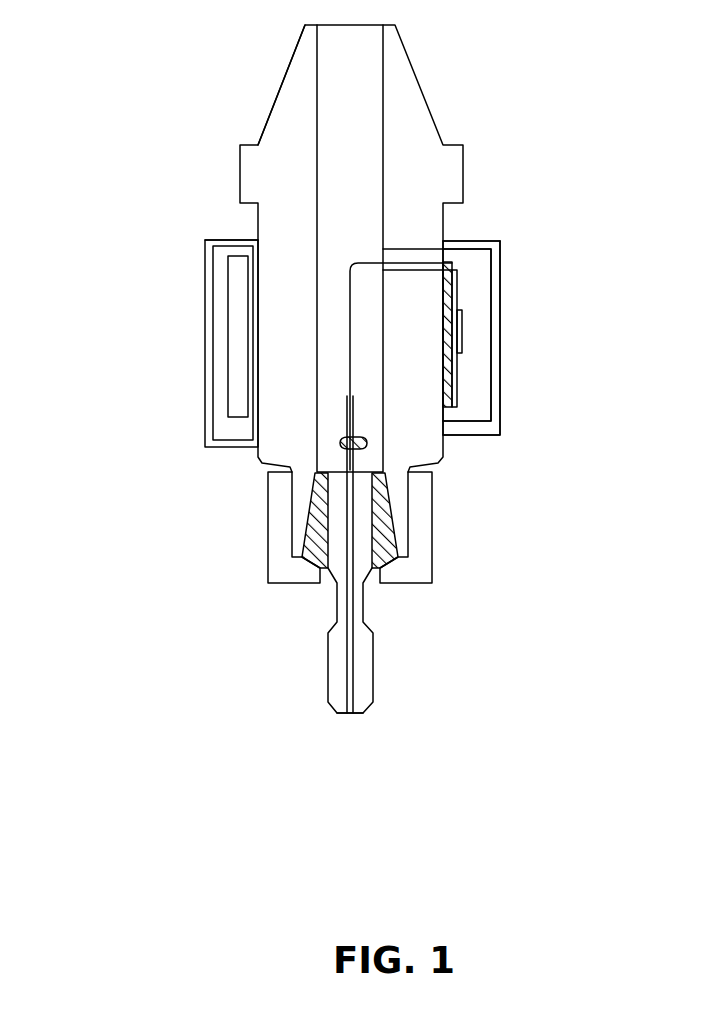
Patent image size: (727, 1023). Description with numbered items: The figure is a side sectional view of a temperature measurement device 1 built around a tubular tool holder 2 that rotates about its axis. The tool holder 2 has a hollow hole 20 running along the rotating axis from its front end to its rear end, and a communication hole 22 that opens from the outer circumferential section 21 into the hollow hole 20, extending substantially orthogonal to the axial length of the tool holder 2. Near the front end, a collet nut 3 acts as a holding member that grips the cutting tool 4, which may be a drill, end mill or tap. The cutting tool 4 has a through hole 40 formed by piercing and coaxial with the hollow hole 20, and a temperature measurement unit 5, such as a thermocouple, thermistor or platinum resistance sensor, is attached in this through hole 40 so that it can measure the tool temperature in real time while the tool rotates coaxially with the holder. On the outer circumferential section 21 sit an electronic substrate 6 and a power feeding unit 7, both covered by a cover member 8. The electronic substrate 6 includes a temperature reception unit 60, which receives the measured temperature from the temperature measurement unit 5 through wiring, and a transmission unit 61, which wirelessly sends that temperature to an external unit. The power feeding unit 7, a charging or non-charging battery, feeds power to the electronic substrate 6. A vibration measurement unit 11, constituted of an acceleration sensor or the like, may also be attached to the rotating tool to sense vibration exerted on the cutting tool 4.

The temperature measurement device 1 is at (168, 116).
The tubular tool holder 2 is at (410, 125).
The hollow hole 20 is at (373, 78).
The outer circumferential section 21 is at (292, 106).
The communication hole 22 is at (405, 262).
The collet nut 3 is at (273, 552).
The cutting tool 4 is at (333, 688).
The temperature measurement unit 5 is at (350, 668).
The through hole 40 is at (355, 693).
The electronic substrate 6 is at (475, 405).
The temperature reception unit 60 is at (467, 335).
The transmission unit 61 is at (447, 334).
The power feeding unit 7 is at (240, 374).
The cover member 8 is at (497, 275).
The vibration measurement unit 11 is at (367, 441).